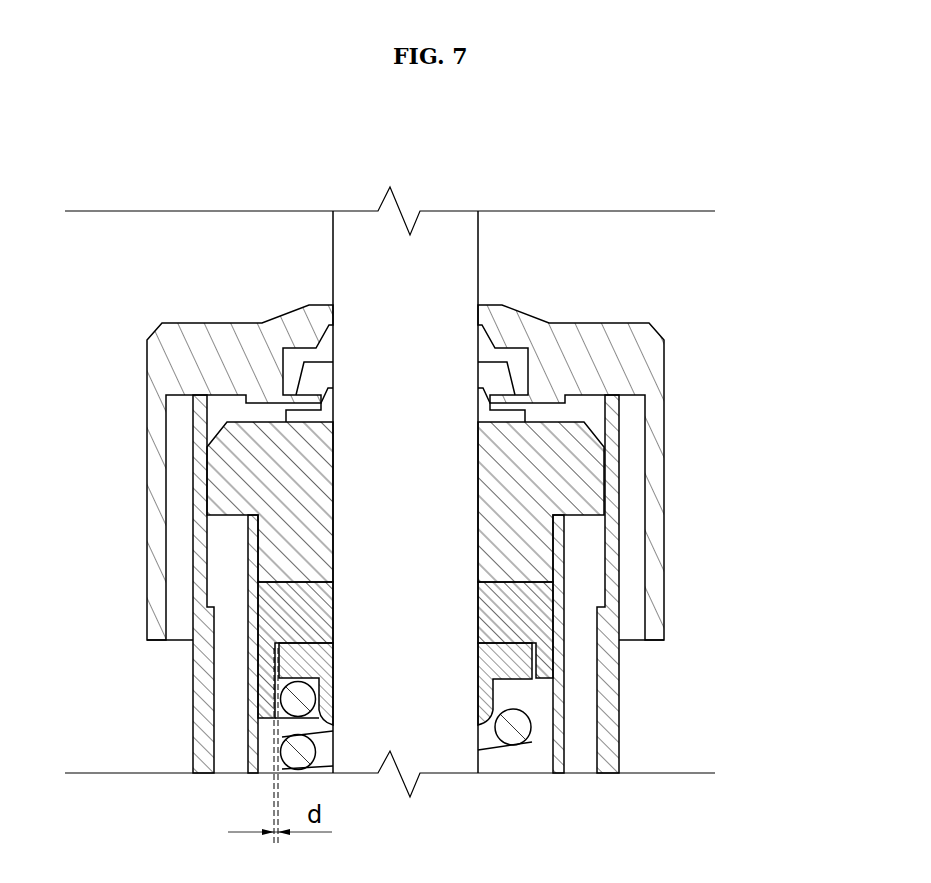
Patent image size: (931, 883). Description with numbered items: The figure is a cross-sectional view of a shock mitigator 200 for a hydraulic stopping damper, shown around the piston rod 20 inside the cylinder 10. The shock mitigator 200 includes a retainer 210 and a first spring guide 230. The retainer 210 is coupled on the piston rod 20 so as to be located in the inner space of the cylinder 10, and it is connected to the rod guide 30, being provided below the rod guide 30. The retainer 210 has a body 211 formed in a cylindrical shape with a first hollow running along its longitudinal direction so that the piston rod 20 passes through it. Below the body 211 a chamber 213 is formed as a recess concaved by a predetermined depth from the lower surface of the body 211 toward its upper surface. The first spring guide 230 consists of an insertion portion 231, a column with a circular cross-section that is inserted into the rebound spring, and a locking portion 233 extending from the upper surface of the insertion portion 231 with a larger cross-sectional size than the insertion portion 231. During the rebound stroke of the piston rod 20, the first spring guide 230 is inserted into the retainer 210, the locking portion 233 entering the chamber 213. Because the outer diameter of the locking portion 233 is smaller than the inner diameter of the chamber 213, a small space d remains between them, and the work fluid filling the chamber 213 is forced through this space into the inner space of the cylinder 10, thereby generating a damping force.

The cylinder 10 is at (611, 736).
The piston rod 20 is at (448, 233).
The rod guide 30 is at (608, 468).
The shock mitigator 200 is at (759, 598).
The retainer 210 is at (556, 616).
The body 211 is at (272, 612).
The chamber 213 is at (279, 669).
The first spring guide 230 is at (539, 663).
The insertion portion 231 is at (507, 752).
The locking portion 233 is at (508, 663).